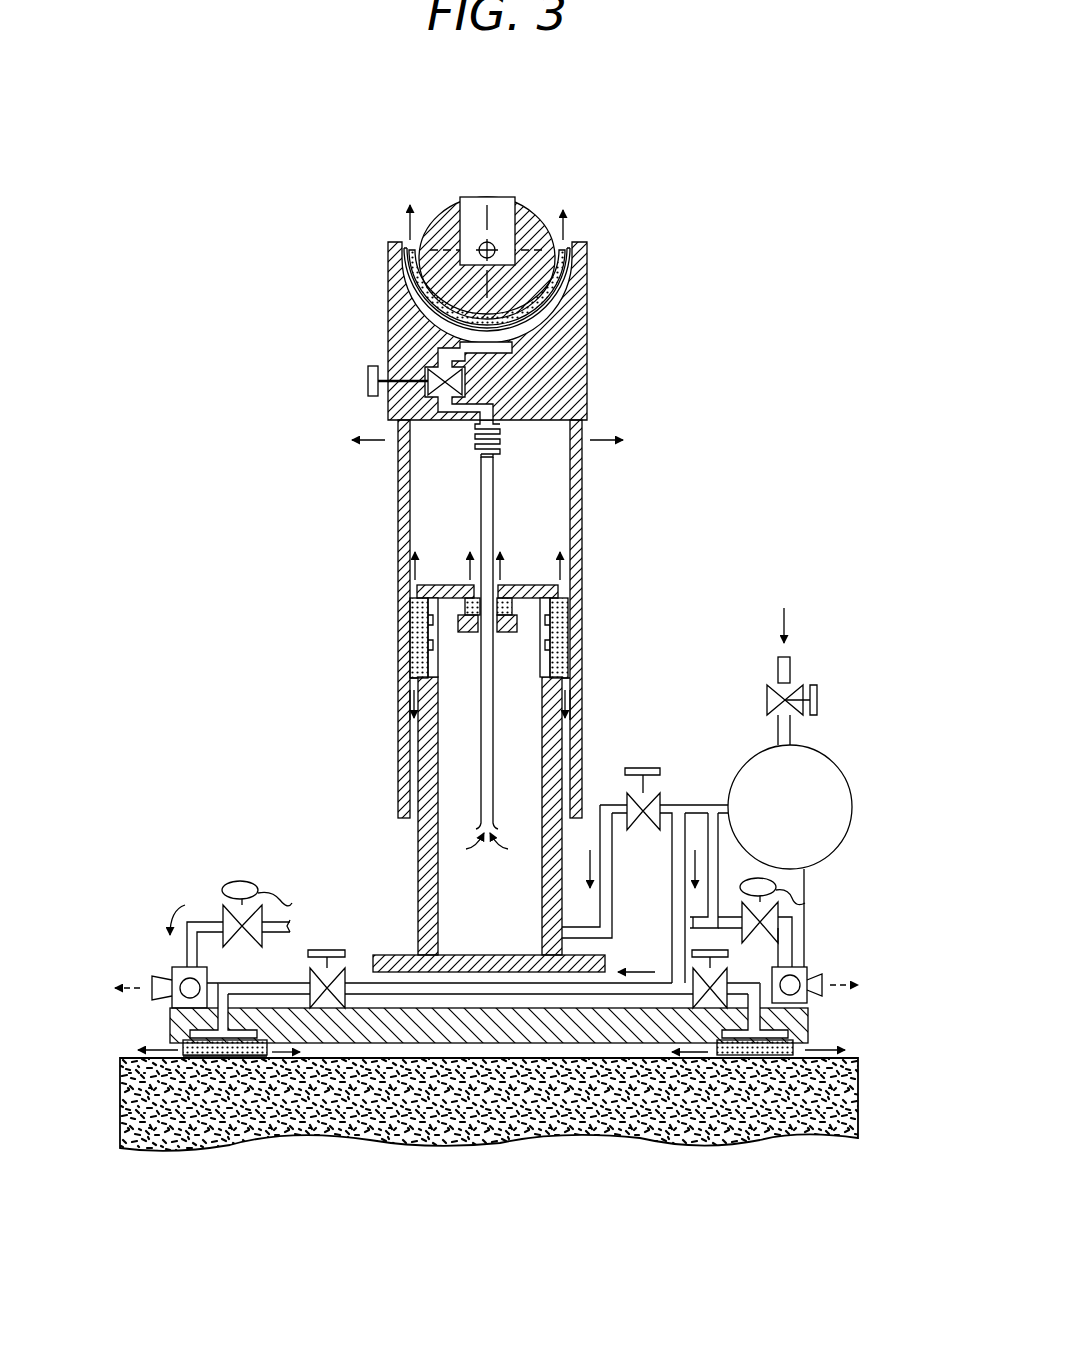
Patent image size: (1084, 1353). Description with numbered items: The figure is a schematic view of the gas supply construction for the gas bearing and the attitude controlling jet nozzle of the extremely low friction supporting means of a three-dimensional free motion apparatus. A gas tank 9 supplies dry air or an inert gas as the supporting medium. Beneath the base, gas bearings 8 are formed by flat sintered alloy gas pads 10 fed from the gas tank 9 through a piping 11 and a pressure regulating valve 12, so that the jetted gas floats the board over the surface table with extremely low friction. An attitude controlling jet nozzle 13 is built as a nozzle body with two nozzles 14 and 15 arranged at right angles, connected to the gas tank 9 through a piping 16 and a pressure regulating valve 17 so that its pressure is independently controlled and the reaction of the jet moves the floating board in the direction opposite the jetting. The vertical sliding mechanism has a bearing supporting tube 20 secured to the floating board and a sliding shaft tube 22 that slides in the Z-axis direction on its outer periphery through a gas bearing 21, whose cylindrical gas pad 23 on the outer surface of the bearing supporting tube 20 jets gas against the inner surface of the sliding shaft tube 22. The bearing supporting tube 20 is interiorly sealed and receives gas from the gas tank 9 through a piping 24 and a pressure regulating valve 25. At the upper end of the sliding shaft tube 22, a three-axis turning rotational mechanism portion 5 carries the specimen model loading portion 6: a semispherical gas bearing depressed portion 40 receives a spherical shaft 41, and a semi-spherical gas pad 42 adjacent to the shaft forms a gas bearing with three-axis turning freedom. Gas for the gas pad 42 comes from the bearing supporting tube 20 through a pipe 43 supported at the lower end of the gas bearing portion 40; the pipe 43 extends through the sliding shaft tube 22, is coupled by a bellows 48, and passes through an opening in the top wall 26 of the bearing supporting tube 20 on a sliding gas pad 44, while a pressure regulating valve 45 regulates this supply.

The 3-axis turning rotational mechanism portion 5 is at (568, 290).
The specimen model loading portion 6 is at (476, 194).
The gas bearings 8 is at (238, 1054).
The gas tank 9 is at (815, 782).
The gas pads 10 is at (200, 1056).
The piping 11 is at (428, 985).
The pressure regulating valve 12 is at (327, 966).
The attitude controlling jet nozzle 13 is at (807, 972).
The nozzle 14 is at (822, 990).
The nozzle 15 is at (815, 1022).
The piping 16 is at (183, 962).
The pressure regulating valve 17 is at (222, 918).
The bearing supporting tube 20 is at (420, 874).
The gas bearing 21 is at (414, 636).
The sliding shaft tube 22 is at (397, 527).
The cylindrical gas pad 23 is at (568, 650).
The piping 24 is at (612, 888).
The pressure regulating valve 25 is at (645, 780).
The top wall 26 is at (575, 582).
The gas bearing depressed portion 40 is at (585, 330).
The spherical shaft 41 is at (537, 198).
The semi-spherical gas pad 42 is at (400, 292).
The pipe 43 is at (493, 490).
The sliding gas pad 44 is at (468, 595).
The pressure regulating valve 45 is at (367, 383).
The bellows 48 is at (500, 455).